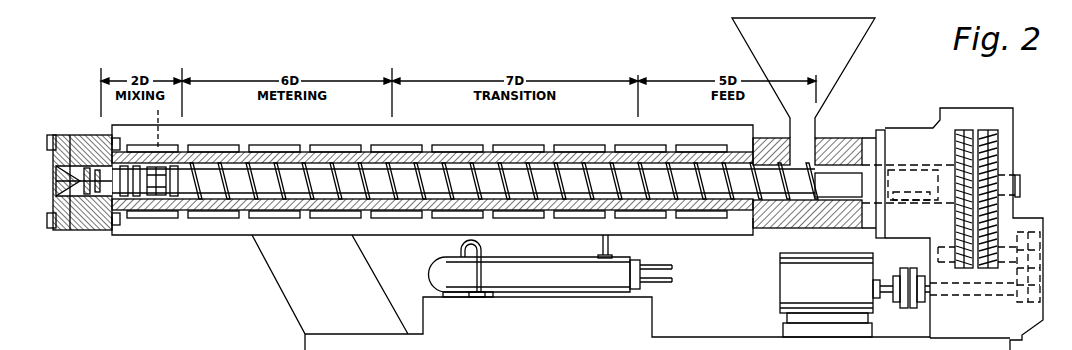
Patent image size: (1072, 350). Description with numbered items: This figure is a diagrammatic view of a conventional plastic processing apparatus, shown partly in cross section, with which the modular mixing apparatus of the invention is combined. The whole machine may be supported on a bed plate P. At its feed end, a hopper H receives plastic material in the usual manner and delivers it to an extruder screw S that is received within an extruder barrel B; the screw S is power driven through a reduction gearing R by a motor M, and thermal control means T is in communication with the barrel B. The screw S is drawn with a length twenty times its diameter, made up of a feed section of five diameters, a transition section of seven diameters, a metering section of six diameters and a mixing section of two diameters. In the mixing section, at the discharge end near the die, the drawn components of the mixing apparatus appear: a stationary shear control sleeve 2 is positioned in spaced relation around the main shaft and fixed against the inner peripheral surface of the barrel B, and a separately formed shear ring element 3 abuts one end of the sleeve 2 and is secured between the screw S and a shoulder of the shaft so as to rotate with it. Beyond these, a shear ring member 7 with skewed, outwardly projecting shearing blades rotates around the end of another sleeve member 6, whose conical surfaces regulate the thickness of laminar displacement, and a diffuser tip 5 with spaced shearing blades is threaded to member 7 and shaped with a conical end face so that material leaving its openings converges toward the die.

The stationary shear control sleeve 2 is at (157, 207).
The shear ring element 3 is at (212, 266).
The diffuser tip 5 is at (82, 233).
The sleeve member 6 is at (128, 220).
The shear ring member 7 is at (136, 210).
The extruder barrel B is at (547, 153).
The extruder screw S is at (784, 187).
The hopper H is at (843, 58).
The thermal control means T is at (620, 263).
The motor M is at (793, 280).
The reduction gearing R is at (1002, 152).
The bed plate P is at (1020, 347).